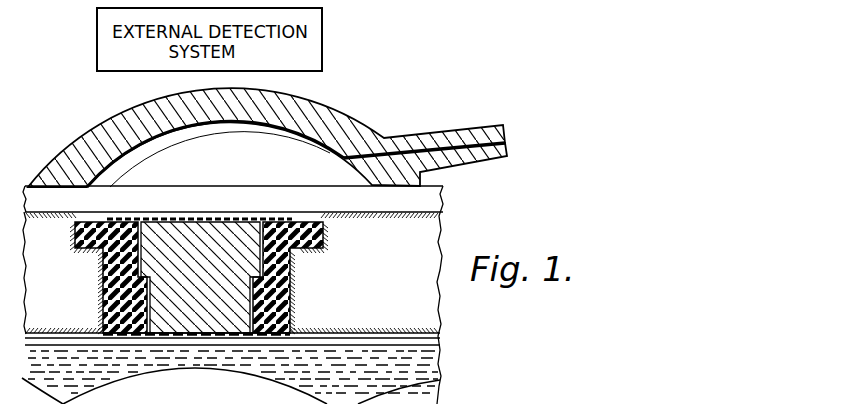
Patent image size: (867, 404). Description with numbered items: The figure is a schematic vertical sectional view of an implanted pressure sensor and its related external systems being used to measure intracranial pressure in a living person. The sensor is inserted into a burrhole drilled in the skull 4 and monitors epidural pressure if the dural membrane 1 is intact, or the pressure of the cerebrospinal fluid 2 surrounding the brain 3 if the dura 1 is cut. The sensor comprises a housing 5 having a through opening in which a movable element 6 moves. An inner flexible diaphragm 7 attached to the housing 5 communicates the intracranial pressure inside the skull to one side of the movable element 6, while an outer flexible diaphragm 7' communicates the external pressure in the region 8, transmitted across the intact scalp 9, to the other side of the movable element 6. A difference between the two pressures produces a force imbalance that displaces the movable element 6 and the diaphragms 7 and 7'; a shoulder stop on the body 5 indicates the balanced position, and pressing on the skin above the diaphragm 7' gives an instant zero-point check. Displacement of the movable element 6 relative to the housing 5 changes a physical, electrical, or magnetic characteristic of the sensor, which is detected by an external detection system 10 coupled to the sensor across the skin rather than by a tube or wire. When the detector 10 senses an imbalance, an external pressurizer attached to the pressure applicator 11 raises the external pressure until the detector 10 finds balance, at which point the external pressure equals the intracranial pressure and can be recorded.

The dural membrane 1 is at (410, 340).
The cerebrospinal fluid 2 is at (357, 362).
The brain 3 is at (93, 403).
The skull 4 is at (44, 285).
The housing 5 is at (116, 318).
The movable element 6 is at (155, 318).
The inner flexible diaphragm 7 is at (206, 351).
The outer flexible diaphragm 7' is at (199, 188).
The region 8 is at (181, 160).
The scalp 9 is at (82, 206).
The external detection system 10 is at (215, 66).
The pressure applicator 11 is at (320, 124).